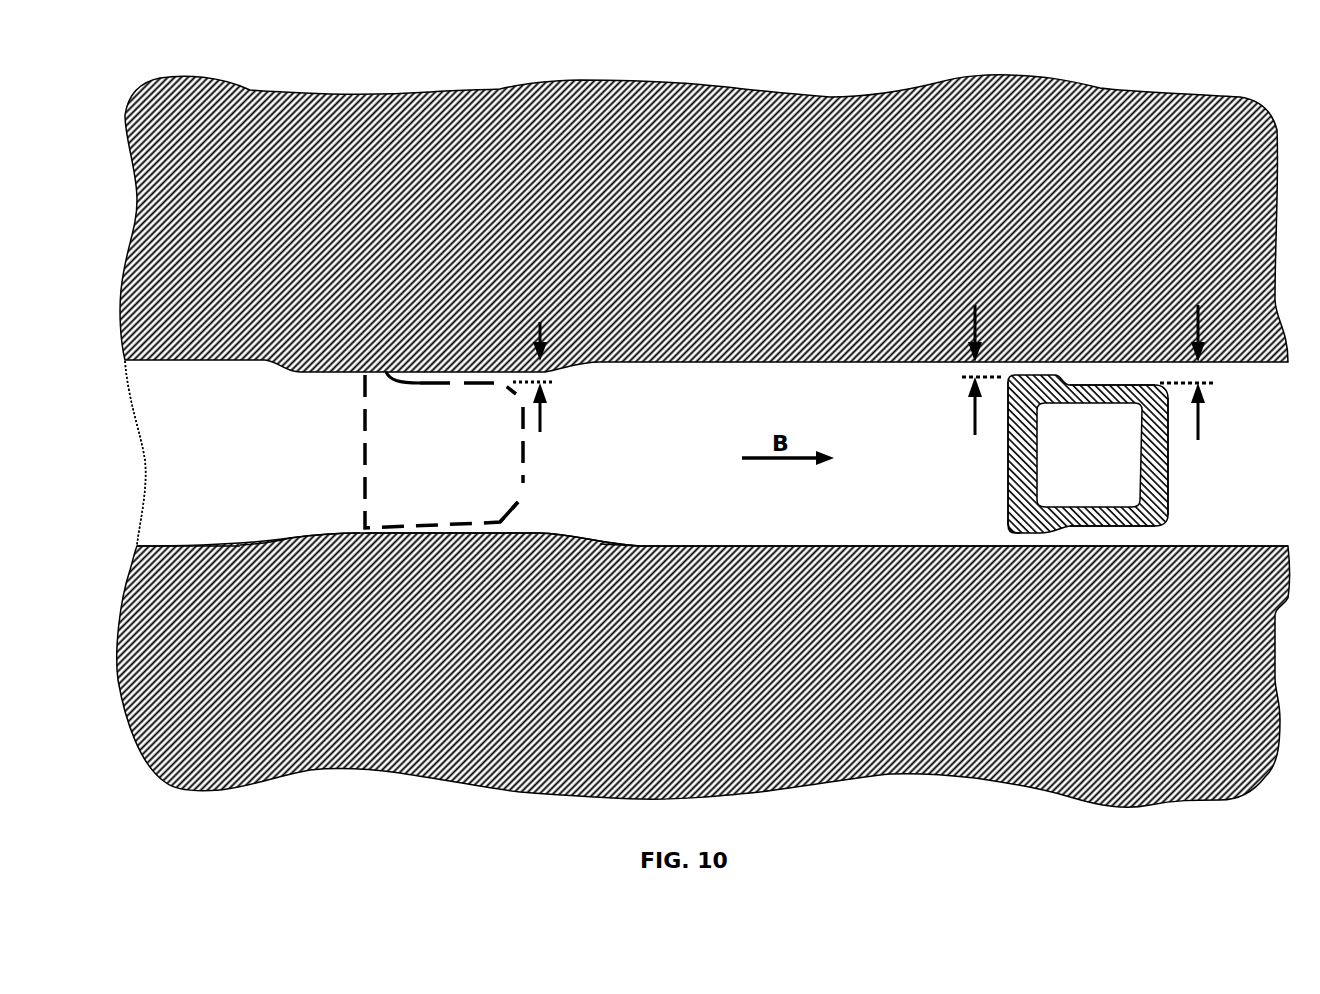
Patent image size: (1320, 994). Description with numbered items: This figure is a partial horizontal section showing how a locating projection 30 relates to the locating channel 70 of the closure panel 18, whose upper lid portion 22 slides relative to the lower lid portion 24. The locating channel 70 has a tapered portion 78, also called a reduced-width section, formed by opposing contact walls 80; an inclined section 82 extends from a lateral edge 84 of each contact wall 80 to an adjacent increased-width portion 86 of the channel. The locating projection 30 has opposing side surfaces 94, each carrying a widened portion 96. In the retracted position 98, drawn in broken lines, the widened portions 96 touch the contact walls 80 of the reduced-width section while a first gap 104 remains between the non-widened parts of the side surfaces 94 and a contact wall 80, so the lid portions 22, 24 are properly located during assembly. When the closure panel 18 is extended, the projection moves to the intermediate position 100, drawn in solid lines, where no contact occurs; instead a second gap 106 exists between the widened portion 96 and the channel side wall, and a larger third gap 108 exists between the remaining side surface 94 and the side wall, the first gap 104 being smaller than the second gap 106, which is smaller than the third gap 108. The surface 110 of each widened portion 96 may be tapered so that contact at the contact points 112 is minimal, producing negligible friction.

The closure panel 18 is at (660, 417).
The upper lid portion 22 is at (134, 385).
The lower lid portion 24 is at (500, 90).
The locating projection 30 is at (540, 456).
The locating channel 70 is at (157, 467).
The tapered portion 78 is at (302, 424).
The contact wall 80 is at (478, 533).
The inclined section 82 is at (325, 545).
The lateral edge 84 is at (352, 533).
The increased-width portion 86 is at (235, 546).
The side surface 94 is at (1100, 386).
The widened portion 96 is at (393, 377).
The retracted position 98 is at (505, 512).
The intermediate position 100 is at (1172, 452).
The first gap 104 is at (555, 383).
The second gap 106 is at (962, 375).
The third gap 108 is at (1207, 377).
The surface of widened portion 110 is at (1010, 514).
The contact point 112 is at (345, 380).